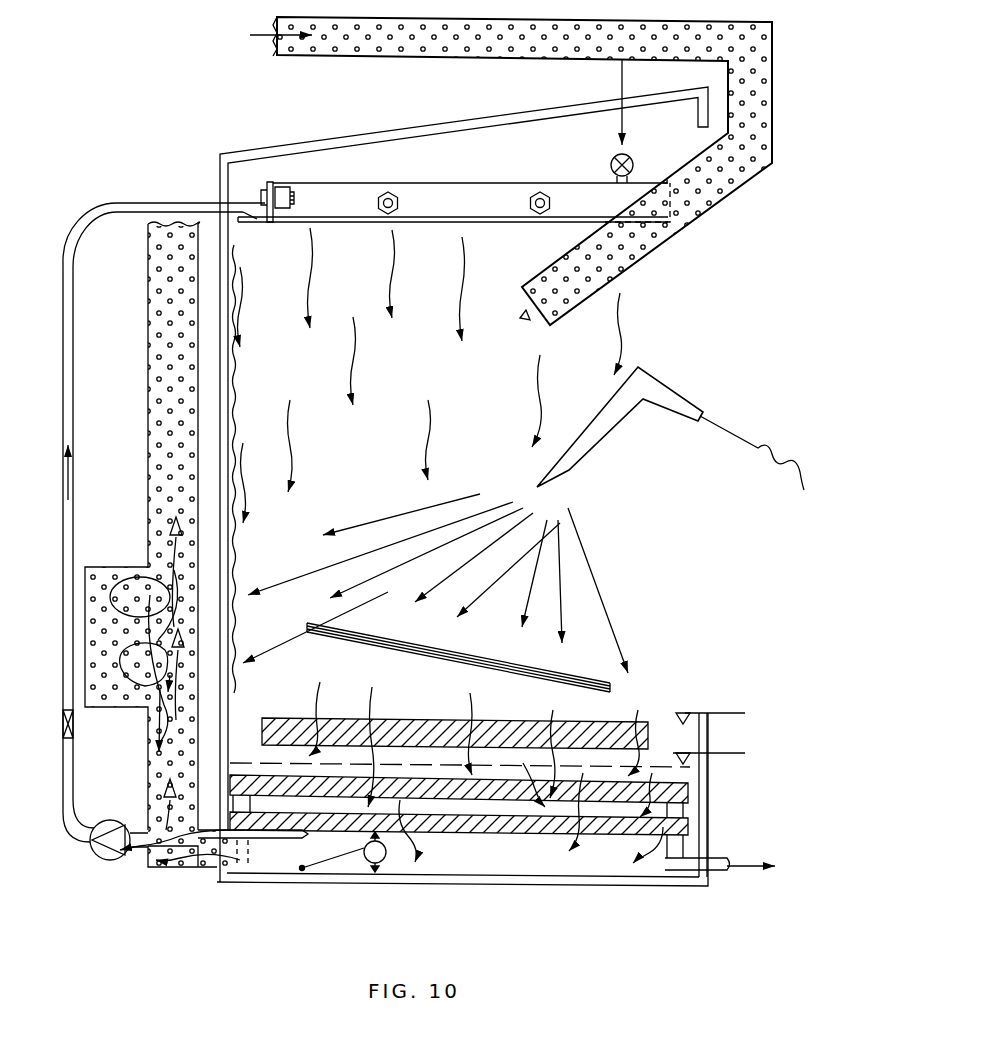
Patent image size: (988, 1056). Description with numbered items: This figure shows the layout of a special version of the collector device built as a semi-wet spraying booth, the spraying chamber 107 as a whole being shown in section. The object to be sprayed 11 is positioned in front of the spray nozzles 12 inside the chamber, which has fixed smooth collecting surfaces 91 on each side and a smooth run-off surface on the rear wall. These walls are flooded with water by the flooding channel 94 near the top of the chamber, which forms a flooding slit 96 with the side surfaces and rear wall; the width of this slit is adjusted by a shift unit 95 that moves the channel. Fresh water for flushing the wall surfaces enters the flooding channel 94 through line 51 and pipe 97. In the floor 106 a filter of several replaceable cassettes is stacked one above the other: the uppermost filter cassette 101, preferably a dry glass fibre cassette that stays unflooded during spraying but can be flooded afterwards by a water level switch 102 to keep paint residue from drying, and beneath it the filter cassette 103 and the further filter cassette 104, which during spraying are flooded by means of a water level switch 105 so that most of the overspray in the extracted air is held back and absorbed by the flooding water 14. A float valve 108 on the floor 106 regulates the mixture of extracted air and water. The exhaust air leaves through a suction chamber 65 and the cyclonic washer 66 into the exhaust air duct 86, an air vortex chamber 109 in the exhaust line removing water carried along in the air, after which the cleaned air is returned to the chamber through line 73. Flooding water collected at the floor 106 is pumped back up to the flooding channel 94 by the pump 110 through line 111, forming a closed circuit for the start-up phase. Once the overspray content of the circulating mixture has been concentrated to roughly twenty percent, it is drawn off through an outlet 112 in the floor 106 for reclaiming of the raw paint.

The object to be sprayed 11 is at (554, 668).
The spray nozzles 12 is at (683, 393).
The flooding water 14 is at (528, 858).
The fresh water line 51 is at (621, 70).
The suction chamber 65 is at (155, 814).
The cyclonic washer 66 is at (148, 734).
The return air line 73 is at (741, 187).
The exhaust air duct 86 is at (148, 324).
The collecting surfaces 91 is at (630, 320).
The flooding channel 94 is at (454, 223).
The shift unit 95 is at (281, 181).
The flooding slit 96 is at (233, 248).
The pipe 97 is at (632, 161).
The uppermost filter cassette 101 is at (330, 718).
The water level switch 102 is at (712, 712).
The filter cassette 103 is at (678, 798).
The filter cassette 104 is at (683, 832).
The water level switch 105 is at (726, 752).
The floor 106 is at (437, 885).
The spraying chamber 107 is at (260, 147).
The float valve 108 is at (302, 870).
The air vortex chamber 109 is at (124, 579).
The pump 110 is at (108, 858).
The line 111 is at (72, 400).
The outlet 112 is at (712, 874).